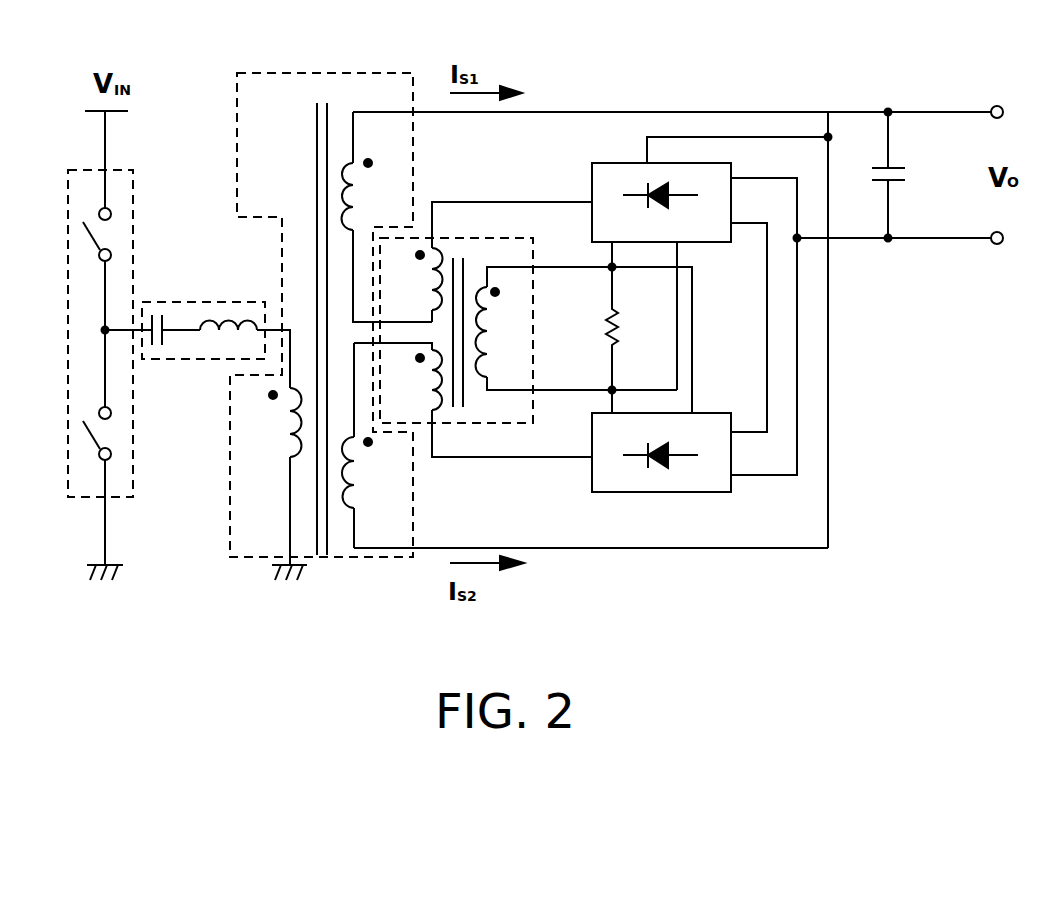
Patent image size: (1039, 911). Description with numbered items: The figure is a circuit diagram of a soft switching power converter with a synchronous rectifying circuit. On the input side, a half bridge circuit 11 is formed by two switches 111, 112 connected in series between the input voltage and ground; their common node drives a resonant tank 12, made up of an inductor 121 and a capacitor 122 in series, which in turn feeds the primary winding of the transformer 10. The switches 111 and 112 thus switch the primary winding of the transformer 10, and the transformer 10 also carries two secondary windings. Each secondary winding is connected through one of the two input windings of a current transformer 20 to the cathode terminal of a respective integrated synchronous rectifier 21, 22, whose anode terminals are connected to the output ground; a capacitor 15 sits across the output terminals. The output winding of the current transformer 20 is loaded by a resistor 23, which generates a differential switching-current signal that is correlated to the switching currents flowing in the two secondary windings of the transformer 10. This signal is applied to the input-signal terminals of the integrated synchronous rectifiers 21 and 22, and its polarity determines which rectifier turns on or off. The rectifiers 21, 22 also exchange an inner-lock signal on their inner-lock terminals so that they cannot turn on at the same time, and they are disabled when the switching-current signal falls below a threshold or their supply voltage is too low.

The transformer 10 is at (237, 90).
The half bridge circuit 11 is at (108, 367).
The switch 111 is at (113, 237).
The switch 112 is at (120, 448).
The resonant tank 12 is at (187, 317).
The inductor 121 is at (222, 310).
The capacitor 122 is at (159, 310).
The current transformer 20 is at (523, 329).
The integrated synchronous rectifier 21 is at (588, 188).
The integrated synchronous rectifier 22 is at (587, 478).
The resistor 23 is at (600, 328).
The capacitor 15 is at (908, 172).